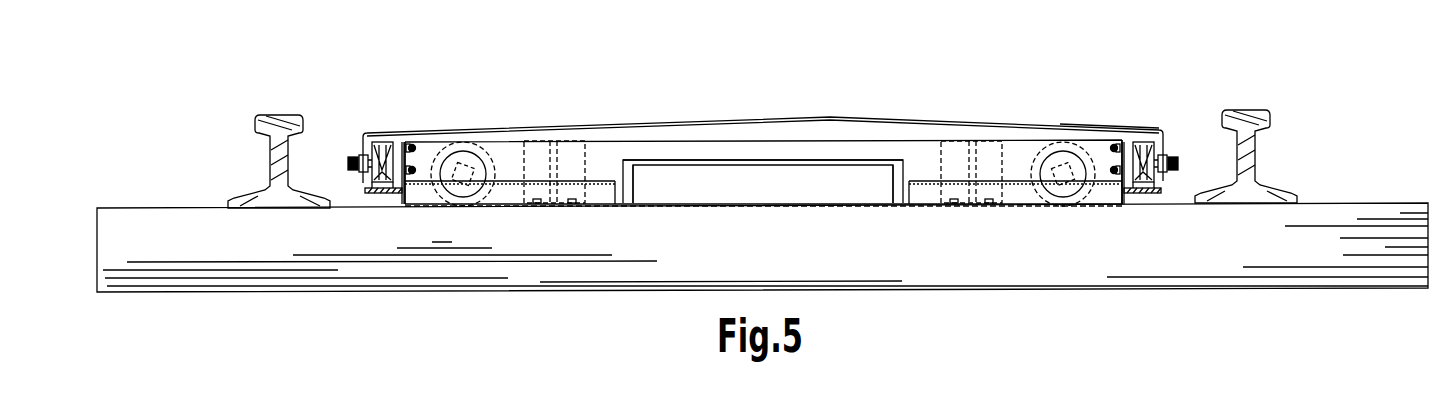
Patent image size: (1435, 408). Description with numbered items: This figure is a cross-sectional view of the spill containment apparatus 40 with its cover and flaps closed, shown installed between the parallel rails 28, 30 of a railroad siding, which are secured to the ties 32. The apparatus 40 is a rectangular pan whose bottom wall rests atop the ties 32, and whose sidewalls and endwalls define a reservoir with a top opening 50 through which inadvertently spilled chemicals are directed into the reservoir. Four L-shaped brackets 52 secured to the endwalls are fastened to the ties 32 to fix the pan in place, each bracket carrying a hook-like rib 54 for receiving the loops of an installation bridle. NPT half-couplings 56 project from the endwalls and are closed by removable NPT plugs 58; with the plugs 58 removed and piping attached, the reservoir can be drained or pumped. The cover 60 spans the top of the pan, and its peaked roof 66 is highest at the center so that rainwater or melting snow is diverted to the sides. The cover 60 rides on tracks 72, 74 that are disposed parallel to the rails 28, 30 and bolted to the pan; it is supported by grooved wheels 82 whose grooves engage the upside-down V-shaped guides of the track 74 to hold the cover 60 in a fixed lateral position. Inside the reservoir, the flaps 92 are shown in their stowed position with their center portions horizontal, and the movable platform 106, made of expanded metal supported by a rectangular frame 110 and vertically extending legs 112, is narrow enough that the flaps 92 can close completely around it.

The rail 28 is at (1240, 112).
The rail 30 is at (283, 118).
The ties 32 is at (1220, 260).
The spill containment apparatus 40 is at (845, 56).
The top opening 50 is at (837, 140).
The L-shaped brackets 52 is at (533, 160).
The hook-like rib 54 is at (564, 158).
The NPT half-couplings 56 is at (488, 194).
The removable NPT plugs 58 is at (458, 197).
The cover 60 is at (910, 116).
The peaked roof 66 is at (968, 125).
The track 72 is at (1143, 200).
The track 74 is at (384, 193).
The wheels 82 is at (378, 145).
The flaps 92 is at (510, 178).
The movable platform 106 is at (750, 157).
The rectangular frame 110 is at (797, 163).
The legs 112 is at (635, 184).